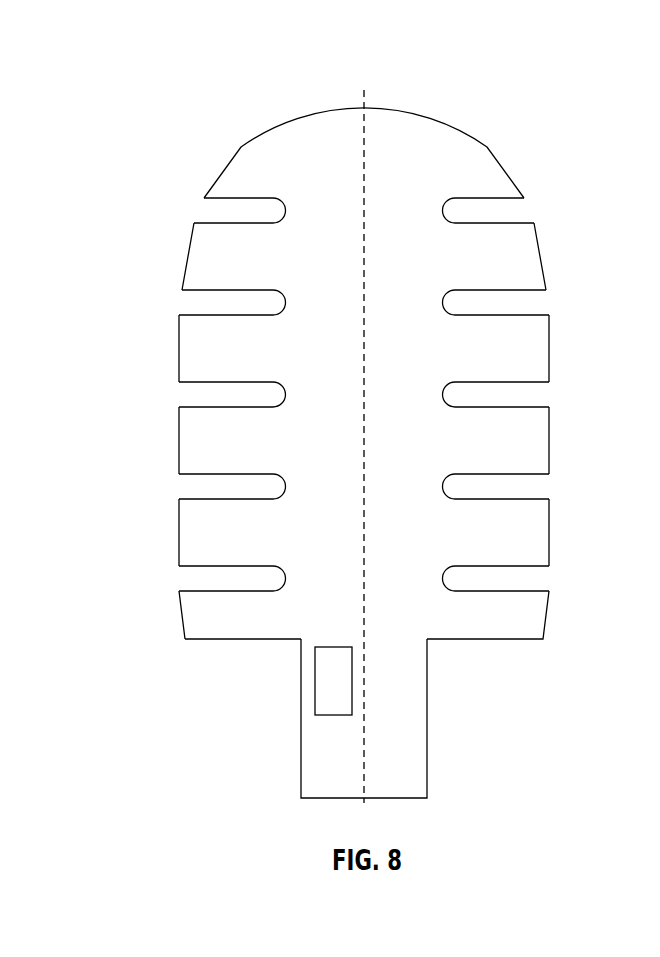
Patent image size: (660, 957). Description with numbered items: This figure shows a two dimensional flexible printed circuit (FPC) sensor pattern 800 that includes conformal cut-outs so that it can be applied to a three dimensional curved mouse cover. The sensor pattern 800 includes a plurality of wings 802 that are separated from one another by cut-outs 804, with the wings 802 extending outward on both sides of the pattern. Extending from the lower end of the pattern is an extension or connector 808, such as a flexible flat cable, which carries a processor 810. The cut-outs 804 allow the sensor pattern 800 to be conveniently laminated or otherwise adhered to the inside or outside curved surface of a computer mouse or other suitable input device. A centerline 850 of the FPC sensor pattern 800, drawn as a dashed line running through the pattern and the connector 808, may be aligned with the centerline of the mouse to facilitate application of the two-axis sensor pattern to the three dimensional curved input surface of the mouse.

The flexible printed circuit sensor pattern 800 is at (199, 80).
The wings 802 is at (178, 444).
The cut-outs 804 is at (188, 302).
The extension or connector 808 is at (427, 729).
The processor 810 is at (315, 680).
The centerline 850 is at (364, 655).